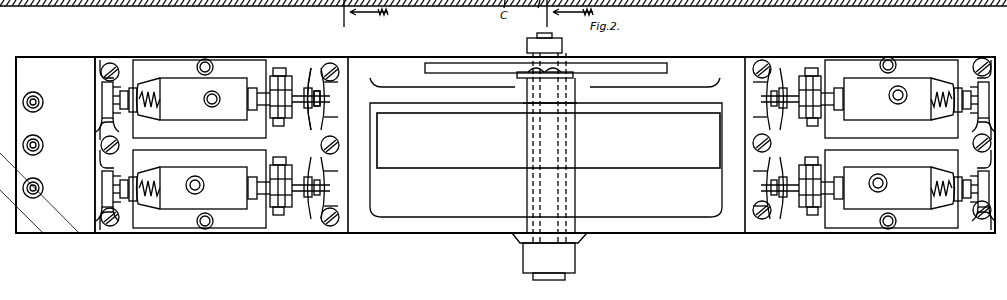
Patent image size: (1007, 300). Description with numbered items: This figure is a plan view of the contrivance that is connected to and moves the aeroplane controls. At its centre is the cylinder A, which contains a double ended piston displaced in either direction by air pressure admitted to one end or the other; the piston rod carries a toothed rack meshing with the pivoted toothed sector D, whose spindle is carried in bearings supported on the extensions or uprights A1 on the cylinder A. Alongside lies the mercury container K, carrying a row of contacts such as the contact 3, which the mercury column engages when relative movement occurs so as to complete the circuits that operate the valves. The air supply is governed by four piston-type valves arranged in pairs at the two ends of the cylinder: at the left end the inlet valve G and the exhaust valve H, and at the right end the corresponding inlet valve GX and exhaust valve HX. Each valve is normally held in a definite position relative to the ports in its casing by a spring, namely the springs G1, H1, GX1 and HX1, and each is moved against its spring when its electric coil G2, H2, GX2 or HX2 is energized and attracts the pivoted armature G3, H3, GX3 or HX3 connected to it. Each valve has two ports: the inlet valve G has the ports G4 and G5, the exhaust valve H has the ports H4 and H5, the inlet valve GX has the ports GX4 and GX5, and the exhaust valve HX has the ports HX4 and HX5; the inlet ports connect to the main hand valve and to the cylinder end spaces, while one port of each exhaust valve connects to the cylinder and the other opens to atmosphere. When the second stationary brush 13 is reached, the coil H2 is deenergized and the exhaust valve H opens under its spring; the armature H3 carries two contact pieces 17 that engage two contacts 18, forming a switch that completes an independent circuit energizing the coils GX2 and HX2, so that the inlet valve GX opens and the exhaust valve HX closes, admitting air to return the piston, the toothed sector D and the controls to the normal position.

The cylinder A is at (60, 80).
The extensions or uprights A1 is at (419, 95).
The contact 3 is at (537, 11).
The mercury container K is at (647, 66).
The toothed sector D is at (548, 140).
The exhaust valve H is at (237, 90).
The spring H1 is at (151, 88).
The electric coil H2 is at (182, 66).
The pivoted armature H3 is at (278, 74).
The port H4 is at (207, 61).
The port H5 is at (204, 99).
The inlet valve G is at (229, 196).
The spring G1 is at (150, 195).
The electric coil G2 is at (181, 218).
The pivoted armature G3 is at (277, 200).
The port G4 is at (206, 230).
The port G5 is at (204, 185).
The inlet valve GX is at (920, 82).
The spring GX1 is at (946, 90).
The electric coil GX2 is at (862, 62).
The pivoted armature GX3 is at (808, 70).
The port GX4 is at (893, 58).
The port GX5 is at (886, 95).
The exhaust valve HX is at (917, 192).
The spring HX1 is at (933, 185).
The electric coil HX2 is at (862, 205).
The pivoted armature HX3 is at (814, 200).
The port HX4 is at (893, 226).
The port HX5 is at (887, 183).
The contact pieces 17 is at (303, 88).
The contacts 18 is at (318, 86).
The second stationary brush 13 is at (334, 100).